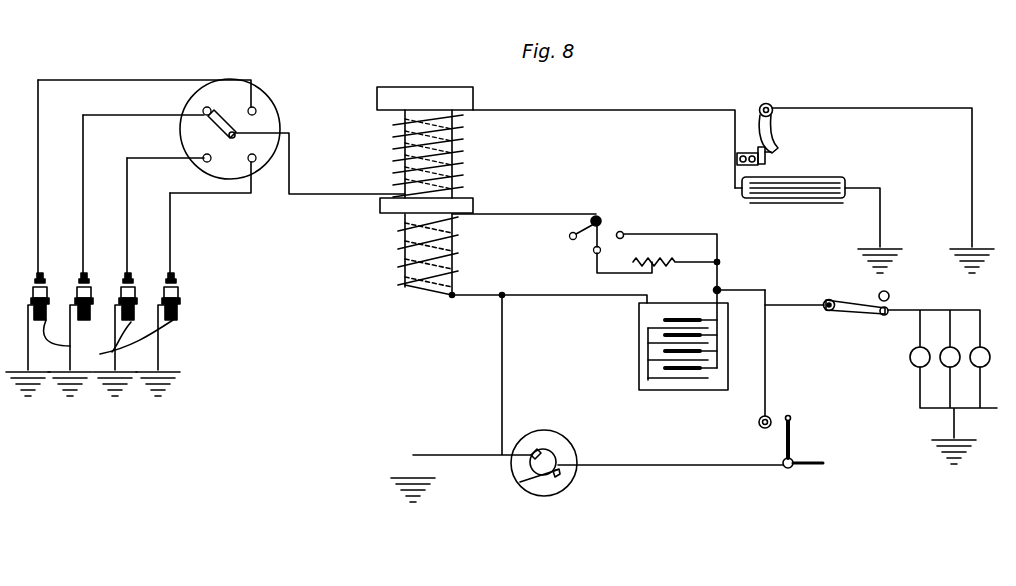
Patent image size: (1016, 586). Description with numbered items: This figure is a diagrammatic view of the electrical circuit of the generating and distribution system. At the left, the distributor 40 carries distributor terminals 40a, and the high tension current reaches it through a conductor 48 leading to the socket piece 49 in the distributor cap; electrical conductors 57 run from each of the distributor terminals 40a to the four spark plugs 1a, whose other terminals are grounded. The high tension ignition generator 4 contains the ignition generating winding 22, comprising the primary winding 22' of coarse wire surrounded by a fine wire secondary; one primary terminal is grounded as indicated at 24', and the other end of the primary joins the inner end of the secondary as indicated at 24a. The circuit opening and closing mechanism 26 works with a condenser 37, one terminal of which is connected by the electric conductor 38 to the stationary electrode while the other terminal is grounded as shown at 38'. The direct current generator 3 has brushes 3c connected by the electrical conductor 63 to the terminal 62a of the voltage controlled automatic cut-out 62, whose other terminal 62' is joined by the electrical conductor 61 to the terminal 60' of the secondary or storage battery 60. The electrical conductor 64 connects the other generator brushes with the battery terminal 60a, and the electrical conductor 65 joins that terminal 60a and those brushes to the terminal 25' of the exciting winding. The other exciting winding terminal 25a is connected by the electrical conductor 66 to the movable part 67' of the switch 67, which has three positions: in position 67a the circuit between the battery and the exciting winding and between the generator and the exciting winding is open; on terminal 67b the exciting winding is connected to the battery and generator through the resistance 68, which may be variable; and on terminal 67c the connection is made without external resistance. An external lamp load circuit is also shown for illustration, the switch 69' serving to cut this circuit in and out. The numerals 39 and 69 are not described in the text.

The electrical conductors 57 is at (58, 80).
The distributor 40 is at (282, 123).
The distributor terminals 40a is at (251, 106).
The socket piece 49 is at (216, 143).
The conductor 48 is at (320, 165).
The spark plugs 1a is at (87, 322).
The high tension ignition generator 4 is at (427, 136).
The connection of primary winding to secondary winding 24a is at (402, 110).
The ground of primary winding terminal 24' is at (415, 194).
The ignition generating winding 22 is at (399, 154).
The primary winding 22' is at (427, 151).
The exciting winding terminal 25a is at (455, 218).
The exciting winding terminal 25' is at (524, 253).
The electrical conductor 65 is at (476, 304).
The electrical conductor 64 is at (504, 383).
The electrical conductor 66 is at (590, 218).
The switch 67 is at (613, 224).
The movable part of switch 67' is at (559, 234).
The switch position 67a is at (571, 240).
The switch terminal 67b is at (609, 273).
The switch terminal 67c is at (630, 236).
The resistance 68 is at (653, 267).
The storage battery terminal 60a is at (689, 283).
The storage battery terminal 60' is at (740, 280).
The secondary or storage battery 60 is at (672, 346).
The electrical conductor 61 is at (770, 352).
The pivot and conductor 39 is at (776, 106).
The circuit opening and closing mechanism 26 is at (786, 142).
The electric conductor 38 is at (732, 166).
The condenser 37 is at (842, 176).
The condenser ground 38' is at (889, 229).
The switch 69' is at (827, 320).
The lamps 69 is at (936, 387).
The cut-out terminal 62' is at (744, 433).
The automatic cut-out 62 is at (812, 437).
The cut-out terminal 62a is at (789, 470).
The electrical conductor 63 is at (670, 468).
The direct current generator 3 is at (546, 494).
The brushes 3c is at (531, 456).